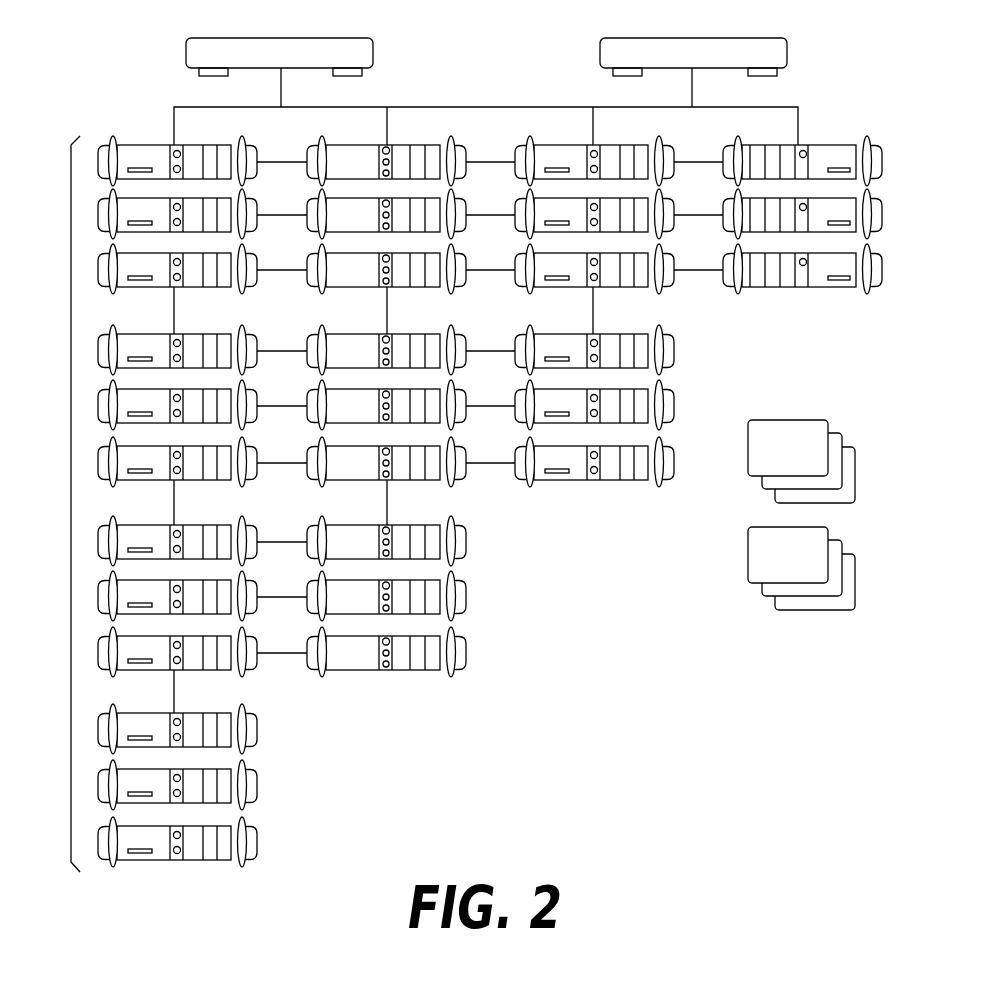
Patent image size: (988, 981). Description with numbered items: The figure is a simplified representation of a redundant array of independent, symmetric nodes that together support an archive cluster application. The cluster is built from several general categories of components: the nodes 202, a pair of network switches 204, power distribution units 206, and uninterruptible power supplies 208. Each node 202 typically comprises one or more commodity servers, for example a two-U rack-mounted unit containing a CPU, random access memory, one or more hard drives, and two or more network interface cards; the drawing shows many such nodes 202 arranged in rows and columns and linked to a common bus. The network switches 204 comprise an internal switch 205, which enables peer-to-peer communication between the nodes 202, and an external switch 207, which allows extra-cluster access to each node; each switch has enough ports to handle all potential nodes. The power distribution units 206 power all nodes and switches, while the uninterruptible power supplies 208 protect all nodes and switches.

The nodes 202 is at (71, 547).
The network switches 204 is at (836, 104).
The internal switch 205 is at (186, 52).
The power distribution units 206 is at (786, 420).
The external switch 207 is at (787, 52).
The uninterruptible power supplies 208 is at (795, 609).